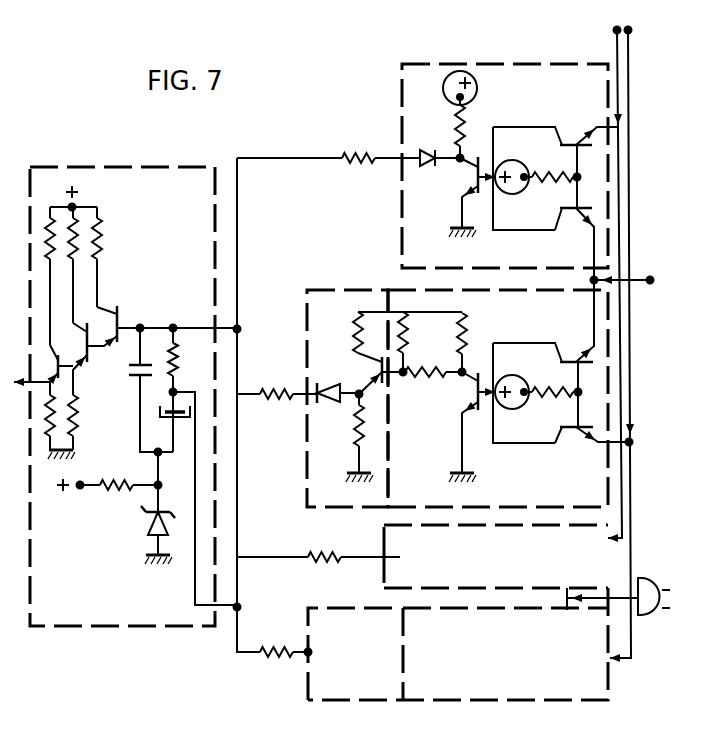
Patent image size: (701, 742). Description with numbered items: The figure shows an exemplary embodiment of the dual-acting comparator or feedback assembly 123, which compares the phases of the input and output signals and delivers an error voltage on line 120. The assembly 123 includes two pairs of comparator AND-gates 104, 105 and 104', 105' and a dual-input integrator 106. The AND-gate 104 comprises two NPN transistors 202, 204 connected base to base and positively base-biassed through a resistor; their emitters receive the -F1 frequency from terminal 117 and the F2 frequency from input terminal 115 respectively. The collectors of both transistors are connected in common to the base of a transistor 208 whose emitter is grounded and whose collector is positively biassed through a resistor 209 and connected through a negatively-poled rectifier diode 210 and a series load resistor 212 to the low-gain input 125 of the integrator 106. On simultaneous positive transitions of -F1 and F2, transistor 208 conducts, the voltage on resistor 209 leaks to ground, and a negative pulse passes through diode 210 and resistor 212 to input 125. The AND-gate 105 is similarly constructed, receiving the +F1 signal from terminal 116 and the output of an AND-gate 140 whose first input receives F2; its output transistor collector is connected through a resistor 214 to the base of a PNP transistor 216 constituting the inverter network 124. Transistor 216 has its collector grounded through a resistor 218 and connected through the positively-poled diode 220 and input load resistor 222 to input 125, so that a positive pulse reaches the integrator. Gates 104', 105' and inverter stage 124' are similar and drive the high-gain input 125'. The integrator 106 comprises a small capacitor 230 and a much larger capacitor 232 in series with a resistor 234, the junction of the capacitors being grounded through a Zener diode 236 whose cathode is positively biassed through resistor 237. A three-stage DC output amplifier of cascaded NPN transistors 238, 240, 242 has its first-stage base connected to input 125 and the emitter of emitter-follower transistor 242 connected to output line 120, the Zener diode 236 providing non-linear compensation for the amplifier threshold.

The dual-input integrator 106 is at (97, 167).
The first-stage transistor 238 is at (119, 305).
The second-stage transistor 240 is at (98, 359).
The third-stage transistor 242 is at (60, 355).
The integrator output line 120 is at (35, 370).
The capacitor 230 is at (140, 390).
The resistor 234 is at (179, 352).
The capacitor 232 is at (190, 497).
The resistor 237 is at (124, 485).
The Zener diode 236 is at (148, 531).
The dual-acting comparator assembly 123 is at (272, 149).
The low-gain input 125 is at (195, 452).
The series load resistor 212 is at (360, 155).
The negatively-poled rectifier diode 210 is at (437, 168).
The AND-gate 104 is at (505, 147).
The resistor 209 is at (466, 116).
The transistor 208 is at (469, 197).
The NPN transistor 202 is at (558, 142).
The NPN transistor 204 is at (560, 210).
The output terminal 117 is at (603, 279).
The output terminal 116 is at (634, 339).
The input terminal 115 is at (626, 284).
The inverter circuit 124 is at (347, 377).
The AND-gate 105 is at (500, 377).
The input load resistor 222 is at (277, 374).
The positively-poled diode 220 is at (331, 381).
The resistor 218 is at (357, 430).
The PNP transistor 216 is at (406, 353).
The resistor 214 is at (449, 424).
The AND-gate 104' is at (477, 553).
The inverter circuit 124' is at (346, 638).
The AND-gate 105' is at (458, 638).
The high-gain input 125' is at (298, 607).
The AND-gate 140 is at (650, 616).